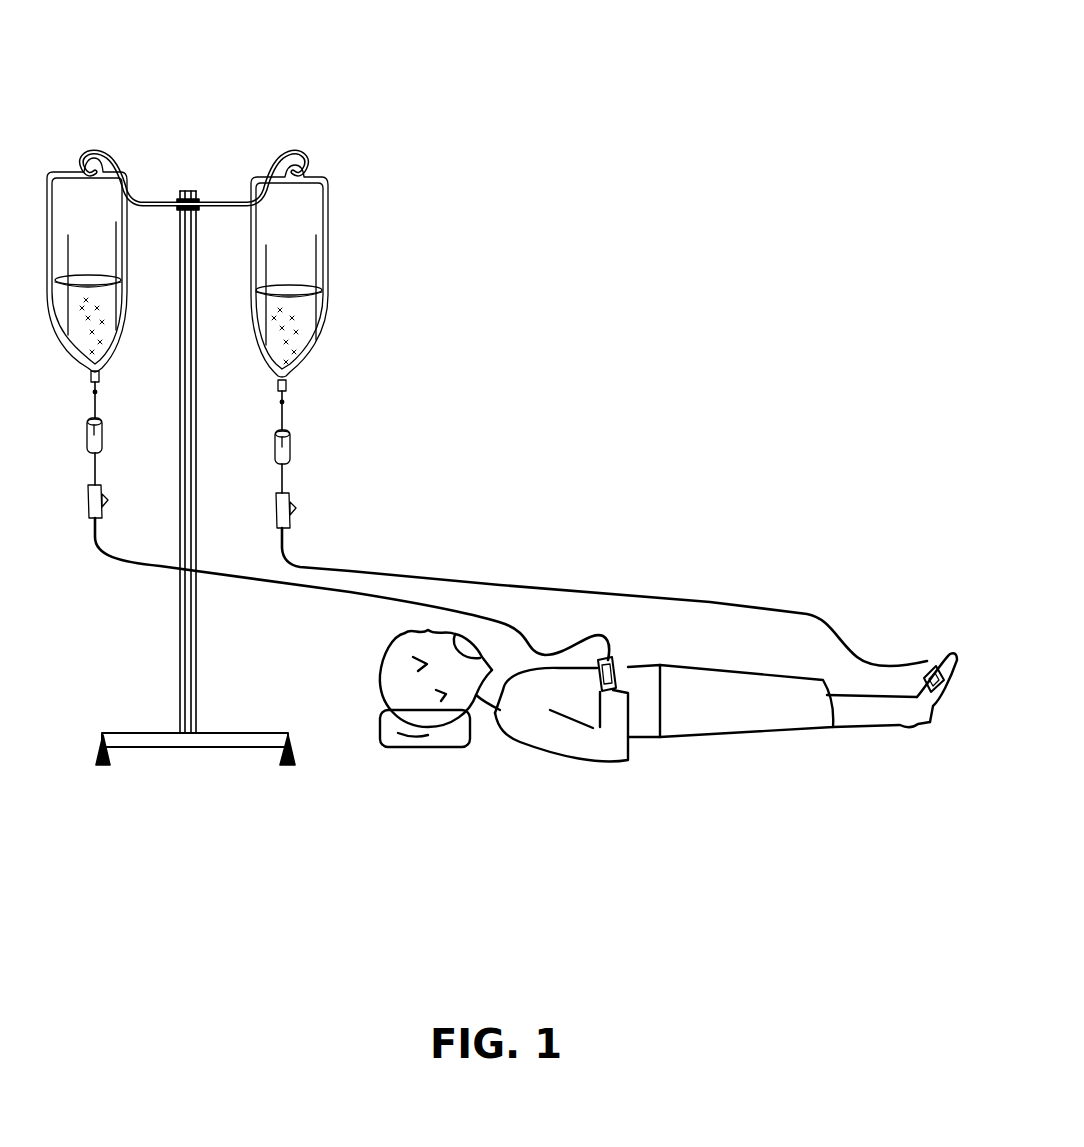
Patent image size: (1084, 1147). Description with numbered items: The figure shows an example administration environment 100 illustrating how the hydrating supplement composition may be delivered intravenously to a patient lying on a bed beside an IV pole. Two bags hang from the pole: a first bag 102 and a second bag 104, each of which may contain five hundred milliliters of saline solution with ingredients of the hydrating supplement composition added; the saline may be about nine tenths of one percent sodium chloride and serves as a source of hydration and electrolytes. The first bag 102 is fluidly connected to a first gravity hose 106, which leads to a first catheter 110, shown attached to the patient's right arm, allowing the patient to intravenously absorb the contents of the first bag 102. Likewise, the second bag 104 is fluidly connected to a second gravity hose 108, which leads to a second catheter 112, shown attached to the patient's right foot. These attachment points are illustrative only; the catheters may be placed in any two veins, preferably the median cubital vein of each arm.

The administration environment 100 is at (860, 61).
The first bag 102 is at (135, 203).
The second bag 104 is at (330, 237).
The first gravity hose 106 is at (263, 575).
The second gravity hose 108 is at (400, 573).
The first catheter 110 is at (609, 657).
The second catheter 112 is at (933, 670).